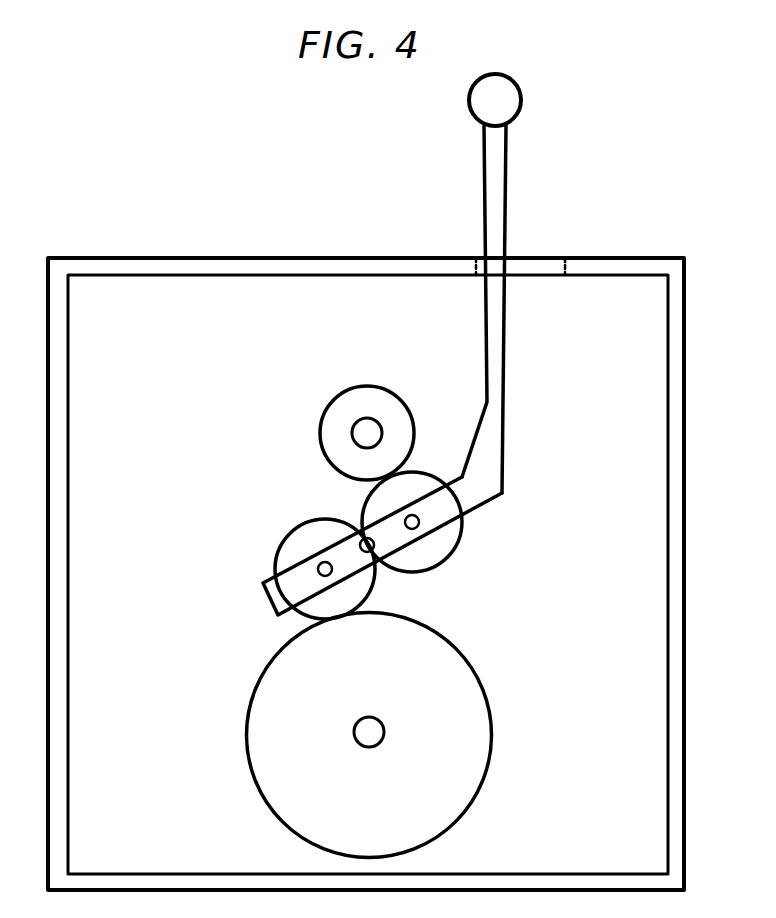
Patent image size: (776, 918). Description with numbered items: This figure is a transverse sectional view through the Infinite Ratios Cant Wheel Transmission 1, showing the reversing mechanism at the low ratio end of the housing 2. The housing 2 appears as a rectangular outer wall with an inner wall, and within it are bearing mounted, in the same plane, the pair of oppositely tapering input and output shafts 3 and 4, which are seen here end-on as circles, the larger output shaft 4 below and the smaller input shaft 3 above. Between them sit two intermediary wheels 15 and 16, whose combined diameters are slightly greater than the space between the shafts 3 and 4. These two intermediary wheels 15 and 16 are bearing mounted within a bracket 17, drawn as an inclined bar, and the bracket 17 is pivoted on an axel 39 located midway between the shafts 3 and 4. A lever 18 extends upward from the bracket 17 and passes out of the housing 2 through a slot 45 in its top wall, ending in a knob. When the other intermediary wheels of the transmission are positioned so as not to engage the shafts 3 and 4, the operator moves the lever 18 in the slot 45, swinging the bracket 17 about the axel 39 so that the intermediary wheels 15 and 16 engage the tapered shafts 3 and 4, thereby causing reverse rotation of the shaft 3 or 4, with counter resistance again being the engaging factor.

The Infinite Ratios Cant Wheel Transmission 1 is at (688, 292).
The housing 2 is at (676, 450).
The input shaft 3 is at (392, 404).
The output shaft 4 is at (465, 673).
The intermediary wheel 15 is at (293, 542).
The intermediary wheel 16 is at (453, 532).
The bracket 17 is at (277, 598).
The lever 18 is at (497, 195).
The axel 39 is at (377, 557).
The slot 45 is at (532, 260).